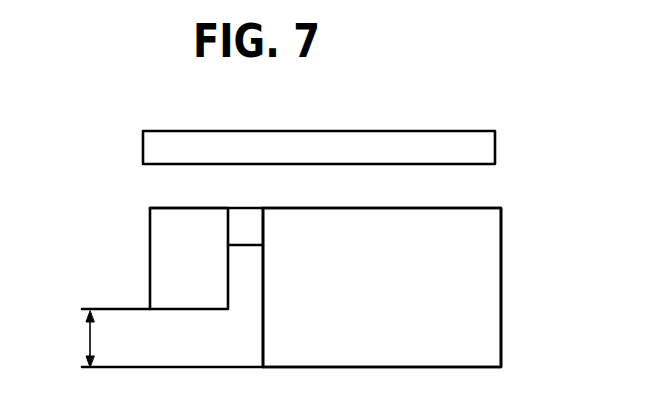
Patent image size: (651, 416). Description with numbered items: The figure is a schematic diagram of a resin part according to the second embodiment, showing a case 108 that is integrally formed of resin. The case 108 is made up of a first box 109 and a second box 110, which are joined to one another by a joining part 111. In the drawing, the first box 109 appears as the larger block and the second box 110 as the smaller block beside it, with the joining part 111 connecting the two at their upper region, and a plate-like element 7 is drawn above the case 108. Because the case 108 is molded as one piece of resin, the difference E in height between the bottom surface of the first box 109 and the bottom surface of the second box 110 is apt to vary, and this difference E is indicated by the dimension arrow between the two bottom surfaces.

The transparent plate / cover 7 is at (472, 131).
The case 108 is at (517, 205).
The first box 109 is at (445, 309).
The second box 110 is at (177, 245).
The joining part 111 is at (247, 222).
The difference in height E is at (88, 340).